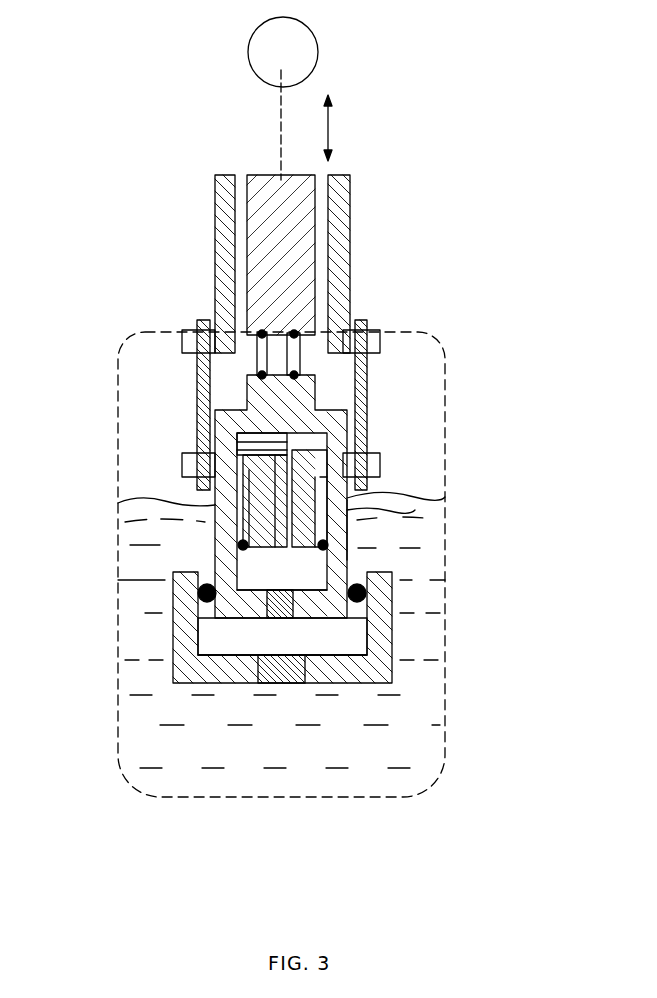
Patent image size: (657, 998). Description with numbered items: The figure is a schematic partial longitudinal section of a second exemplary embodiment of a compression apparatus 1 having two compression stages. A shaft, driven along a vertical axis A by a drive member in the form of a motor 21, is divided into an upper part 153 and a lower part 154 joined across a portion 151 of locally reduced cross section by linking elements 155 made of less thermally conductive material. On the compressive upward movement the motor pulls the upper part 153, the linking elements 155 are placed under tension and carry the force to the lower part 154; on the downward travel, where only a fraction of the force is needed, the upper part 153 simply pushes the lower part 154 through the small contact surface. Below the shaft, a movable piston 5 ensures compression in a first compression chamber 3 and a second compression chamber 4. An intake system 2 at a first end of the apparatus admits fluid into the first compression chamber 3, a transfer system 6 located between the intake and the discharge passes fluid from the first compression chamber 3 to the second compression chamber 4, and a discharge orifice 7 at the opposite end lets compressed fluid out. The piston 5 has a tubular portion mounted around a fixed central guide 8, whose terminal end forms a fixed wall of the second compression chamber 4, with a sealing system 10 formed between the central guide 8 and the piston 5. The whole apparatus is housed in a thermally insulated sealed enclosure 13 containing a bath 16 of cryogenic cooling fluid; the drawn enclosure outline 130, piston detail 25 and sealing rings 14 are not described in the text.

The compression apparatus 1 is at (538, 257).
The motor 21 is at (265, 52).
The axis A is at (280, 133).
The upper part of the shaft 153 is at (258, 237).
The portion of locally reduced cross section 151 is at (283, 352).
The linking element 155 is at (300, 362).
The lower part of the shaft 154 is at (242, 400).
The valve piston 25 is at (237, 440).
The discharge orifice 7 is at (243, 548).
The central guide 8 is at (345, 522).
The sealing system 10 is at (350, 545).
The sealing ring 14 is at (345, 565).
The thermally insulated sealed enclosure 13 is at (383, 630).
The movable piston 5 is at (392, 678).
The second compression chamber 4 is at (262, 578).
The first compression chamber 3 is at (228, 637).
The transfer system 6 is at (287, 599).
The intake system 2 is at (288, 683).
The housing 130 is at (130, 340).
The bath of cryogenic cooling fluid 16 is at (240, 748).